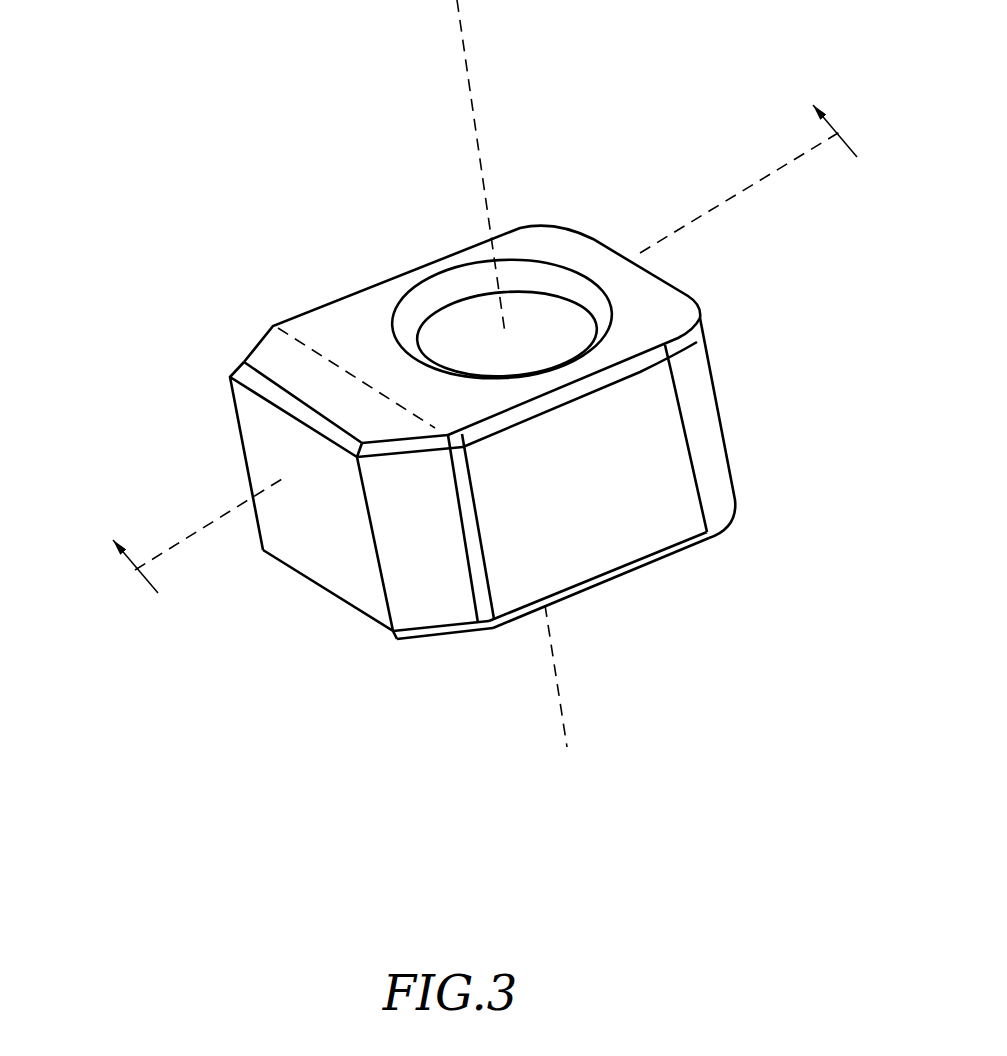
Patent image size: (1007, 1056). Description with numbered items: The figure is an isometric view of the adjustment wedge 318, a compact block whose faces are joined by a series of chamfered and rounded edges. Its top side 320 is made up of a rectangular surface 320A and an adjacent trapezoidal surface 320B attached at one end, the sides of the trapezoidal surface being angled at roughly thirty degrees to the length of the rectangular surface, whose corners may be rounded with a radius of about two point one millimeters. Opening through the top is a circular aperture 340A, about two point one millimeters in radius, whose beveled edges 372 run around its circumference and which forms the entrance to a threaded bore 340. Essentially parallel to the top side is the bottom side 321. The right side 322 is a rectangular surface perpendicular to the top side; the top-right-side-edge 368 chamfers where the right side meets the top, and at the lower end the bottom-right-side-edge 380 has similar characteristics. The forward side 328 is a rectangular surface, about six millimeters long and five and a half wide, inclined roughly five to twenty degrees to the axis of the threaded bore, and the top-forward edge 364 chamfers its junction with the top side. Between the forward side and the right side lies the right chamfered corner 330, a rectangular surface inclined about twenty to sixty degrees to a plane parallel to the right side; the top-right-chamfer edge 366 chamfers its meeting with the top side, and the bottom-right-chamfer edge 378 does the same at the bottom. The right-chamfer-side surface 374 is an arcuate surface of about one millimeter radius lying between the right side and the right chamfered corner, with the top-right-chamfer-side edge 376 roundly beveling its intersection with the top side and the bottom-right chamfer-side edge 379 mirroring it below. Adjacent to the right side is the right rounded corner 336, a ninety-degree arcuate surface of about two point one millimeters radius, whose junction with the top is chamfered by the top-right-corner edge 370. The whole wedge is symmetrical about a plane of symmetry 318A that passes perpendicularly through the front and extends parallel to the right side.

The adjustment wedge 318 is at (182, 127).
The plane of symmetry 318A is at (160, 560).
The top side 320 is at (317, 303).
The rectangular surface 320A is at (377, 317).
The trapezoidal surface 320B is at (270, 357).
The bottom side 321 is at (633, 573).
The right side 322 is at (642, 488).
The forward side 328 is at (300, 507).
The right chamfered corner 330 is at (418, 541).
The right rounded corner 336 is at (702, 453).
The threaded bore 340 is at (503, 337).
The circular aperture 340A is at (585, 272).
The top-forward edge 364 is at (267, 393).
The top-right-chamfer edge 366 is at (400, 448).
The top-right-side-edge 368 is at (590, 388).
The top-right-corner edge 370 is at (690, 340).
The beveled edges 372 is at (443, 297).
The right-chamfer-side surface 374 is at (477, 563).
The top-right-chamfer-side edge 376 is at (446, 433).
The bottom-right-chamfer edge 378 is at (443, 643).
The bottom-right chamfer-side edge 379 is at (487, 637).
The bottom-right-side-edge 380 is at (527, 617).